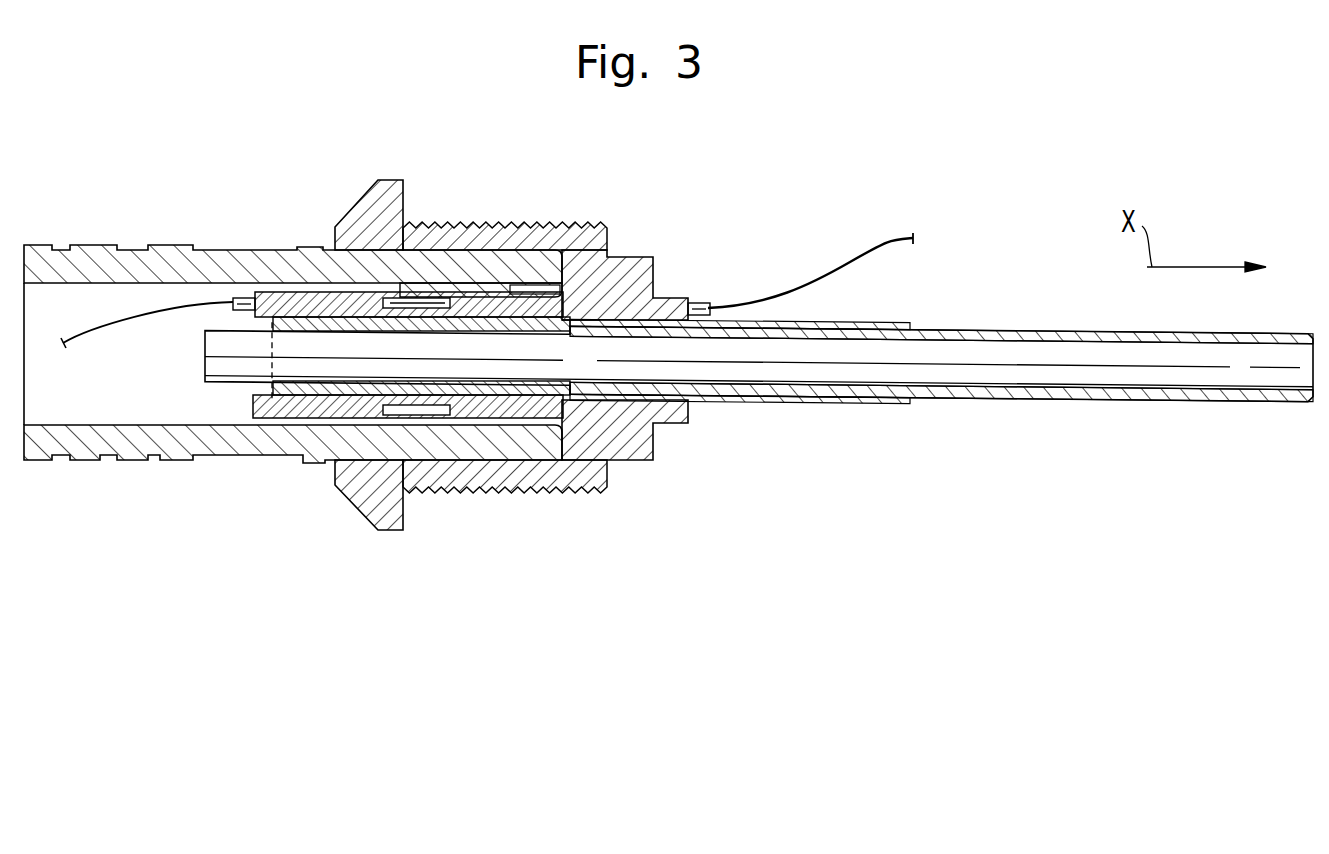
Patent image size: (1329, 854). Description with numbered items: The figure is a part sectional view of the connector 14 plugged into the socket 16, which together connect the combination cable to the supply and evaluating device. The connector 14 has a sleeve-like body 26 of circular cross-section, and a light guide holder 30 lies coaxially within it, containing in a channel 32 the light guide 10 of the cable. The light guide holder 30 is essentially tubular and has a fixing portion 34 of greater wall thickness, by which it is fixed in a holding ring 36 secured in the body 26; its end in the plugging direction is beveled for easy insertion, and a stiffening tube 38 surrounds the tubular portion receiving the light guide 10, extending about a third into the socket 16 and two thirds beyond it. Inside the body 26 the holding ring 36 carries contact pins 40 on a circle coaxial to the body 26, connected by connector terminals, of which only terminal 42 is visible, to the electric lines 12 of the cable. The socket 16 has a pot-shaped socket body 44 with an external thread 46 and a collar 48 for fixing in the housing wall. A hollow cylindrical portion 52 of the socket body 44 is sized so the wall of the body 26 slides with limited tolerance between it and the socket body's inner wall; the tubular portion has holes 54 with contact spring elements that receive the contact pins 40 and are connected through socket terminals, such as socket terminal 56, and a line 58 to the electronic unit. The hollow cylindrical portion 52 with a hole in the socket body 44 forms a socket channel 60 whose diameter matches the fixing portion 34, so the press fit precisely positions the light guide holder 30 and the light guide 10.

The light guide 10 is at (1085, 383).
The electric lines 12 is at (98, 327).
The connector 14 is at (210, 468).
The socket 16 is at (541, 204).
The body 26 is at (167, 262).
The light guide holder 30 is at (990, 402).
The channel 32 is at (1030, 345).
The fixing portion 34 is at (303, 392).
The holding ring 36 is at (305, 300).
The stiffening tube 38 is at (794, 404).
The contact pins 40 is at (418, 283).
The connector terminal 42 is at (240, 298).
The socket body 44 is at (572, 242).
The external thread 46 is at (530, 494).
The collar 48 is at (370, 500).
The hollow cylindrical portion 52 is at (462, 405).
The holes 54 is at (468, 292).
The socket terminal 56 is at (707, 303).
The line 58 is at (865, 250).
The socket channel 60 is at (567, 318).